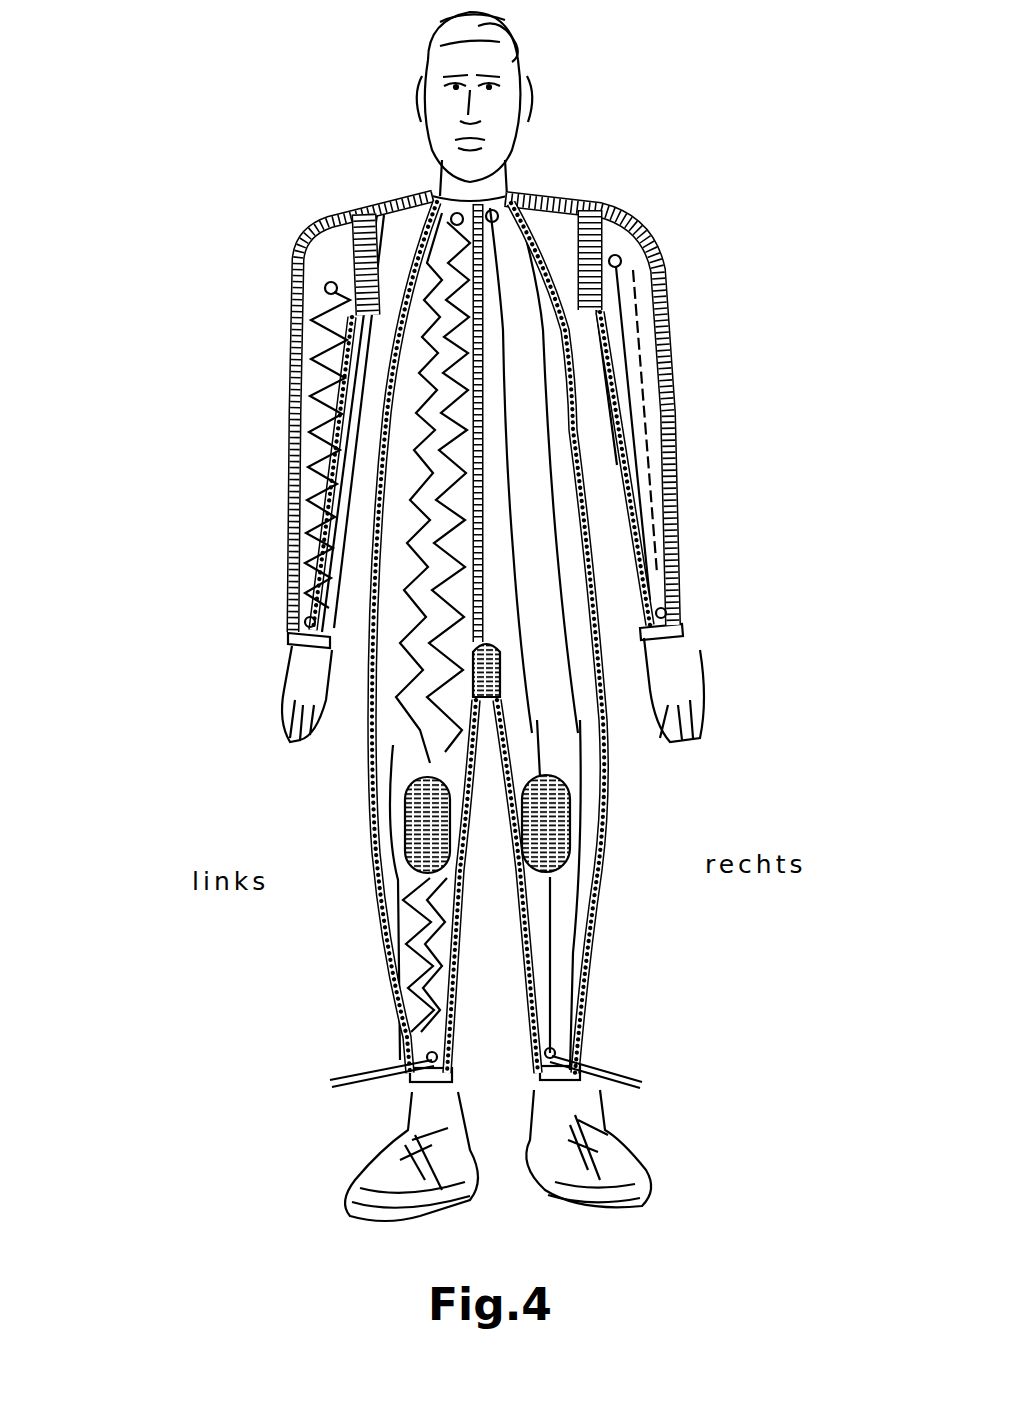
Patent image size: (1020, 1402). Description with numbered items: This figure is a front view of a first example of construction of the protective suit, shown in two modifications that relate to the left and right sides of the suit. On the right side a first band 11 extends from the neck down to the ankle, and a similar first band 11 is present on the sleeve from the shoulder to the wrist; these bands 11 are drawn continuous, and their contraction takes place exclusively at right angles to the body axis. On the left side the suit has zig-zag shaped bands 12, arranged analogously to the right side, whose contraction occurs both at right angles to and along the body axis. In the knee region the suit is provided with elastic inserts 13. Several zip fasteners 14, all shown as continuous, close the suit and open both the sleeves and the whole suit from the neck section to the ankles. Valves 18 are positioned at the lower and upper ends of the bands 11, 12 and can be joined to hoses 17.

The first band 11 is at (537, 548).
The zig-zag shaped bands 12 is at (320, 425).
The elastic inserts 13 is at (410, 848).
The zip fasteners 14 is at (607, 806).
The hoses 17 is at (590, 1074).
The valves 18 is at (552, 1053).